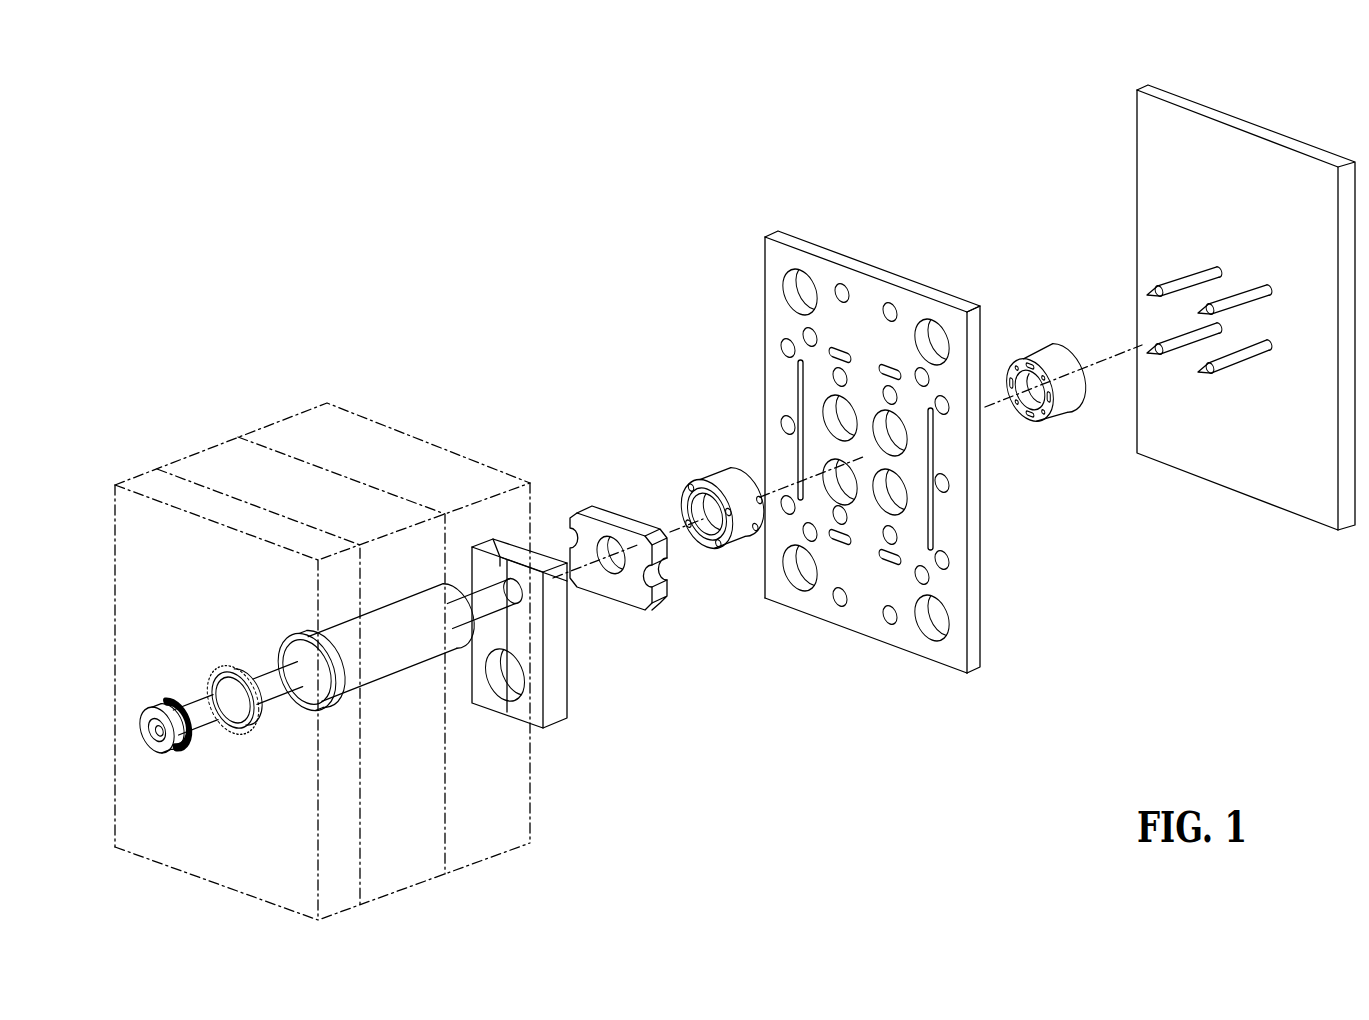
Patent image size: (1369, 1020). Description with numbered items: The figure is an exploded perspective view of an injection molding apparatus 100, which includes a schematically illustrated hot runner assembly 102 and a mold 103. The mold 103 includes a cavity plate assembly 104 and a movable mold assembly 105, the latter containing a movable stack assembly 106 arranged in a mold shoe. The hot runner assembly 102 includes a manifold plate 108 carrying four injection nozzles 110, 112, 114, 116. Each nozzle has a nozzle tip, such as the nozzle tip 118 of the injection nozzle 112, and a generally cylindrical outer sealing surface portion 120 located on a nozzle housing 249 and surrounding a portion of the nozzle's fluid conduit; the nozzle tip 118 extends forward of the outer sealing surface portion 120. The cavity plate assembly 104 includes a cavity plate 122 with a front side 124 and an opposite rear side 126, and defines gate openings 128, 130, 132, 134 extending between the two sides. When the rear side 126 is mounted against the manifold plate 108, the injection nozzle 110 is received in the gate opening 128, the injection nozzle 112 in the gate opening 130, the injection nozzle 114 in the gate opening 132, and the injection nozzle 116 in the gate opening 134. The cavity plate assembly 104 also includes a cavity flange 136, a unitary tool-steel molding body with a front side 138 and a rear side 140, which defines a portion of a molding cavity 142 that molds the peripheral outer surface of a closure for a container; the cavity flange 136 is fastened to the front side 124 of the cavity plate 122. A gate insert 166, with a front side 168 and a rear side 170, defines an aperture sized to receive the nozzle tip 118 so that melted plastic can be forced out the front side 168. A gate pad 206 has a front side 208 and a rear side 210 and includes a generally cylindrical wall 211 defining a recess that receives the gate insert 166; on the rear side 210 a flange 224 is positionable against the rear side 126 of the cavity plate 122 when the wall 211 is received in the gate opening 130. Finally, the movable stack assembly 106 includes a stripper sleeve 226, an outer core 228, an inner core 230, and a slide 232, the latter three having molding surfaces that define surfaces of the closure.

The injection molding apparatus 100 is at (325, 105).
The hot runner assembly 102 is at (1148, 63).
The mold 103 is at (500, 313).
The cavity plate assembly 104 is at (768, 210).
The movable mold assembly 105 is at (272, 423).
The movable stack assembly 106 is at (270, 605).
The manifold plate 108 is at (1247, 127).
The injection nozzle 110 is at (1166, 286).
The injection nozzle 112 is at (1235, 303).
The injection nozzle 114 is at (1167, 352).
The injection nozzle 116 is at (1237, 358).
The nozzle tip 118 is at (1198, 316).
The outer sealing surface portion 120 is at (1231, 308).
The cavity plate 122 is at (866, 268).
The front side 124 is at (953, 655).
The rear side 126 is at (987, 641).
The gate opening 128 is at (836, 413).
The gate opening 130 is at (903, 434).
The gate opening 132 is at (845, 483).
The gate opening 134 is at (887, 497).
The cavity flange 136 is at (598, 498).
The front side 138 is at (613, 592).
The rear side 140 is at (672, 580).
The molding cavity 142 is at (600, 548).
The gate insert 166 is at (687, 497).
The front side 168 is at (690, 547).
The rear side 170 is at (748, 475).
The gate pad 206 is at (1062, 400).
The front side 208 is at (1006, 413).
The rear side 210 is at (1093, 388).
The generally cylindrical wall 211 is at (1017, 365).
The flange 224 is at (1057, 350).
The stripper sleeve 226 is at (376, 626).
The outer core 228 is at (267, 668).
The inner core 230 is at (197, 702).
The slide 232 is at (488, 542).
The nozzle housing 249 is at (1253, 293).